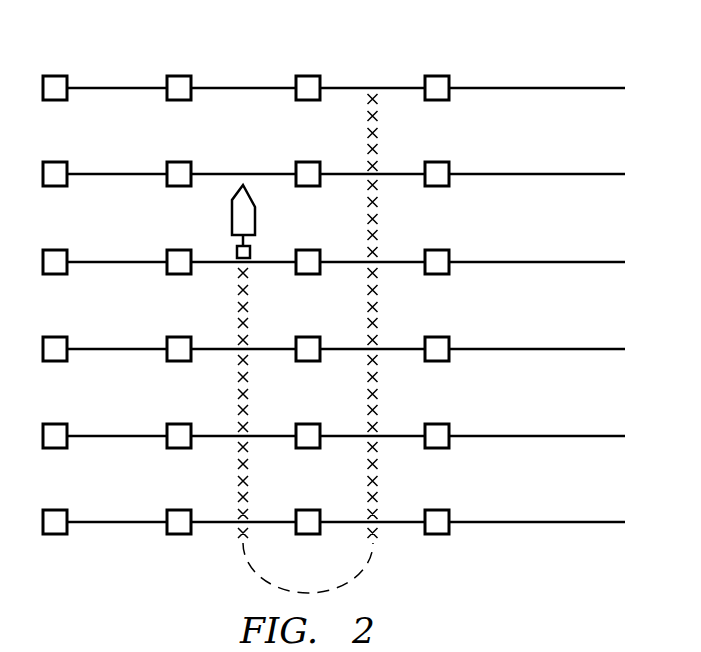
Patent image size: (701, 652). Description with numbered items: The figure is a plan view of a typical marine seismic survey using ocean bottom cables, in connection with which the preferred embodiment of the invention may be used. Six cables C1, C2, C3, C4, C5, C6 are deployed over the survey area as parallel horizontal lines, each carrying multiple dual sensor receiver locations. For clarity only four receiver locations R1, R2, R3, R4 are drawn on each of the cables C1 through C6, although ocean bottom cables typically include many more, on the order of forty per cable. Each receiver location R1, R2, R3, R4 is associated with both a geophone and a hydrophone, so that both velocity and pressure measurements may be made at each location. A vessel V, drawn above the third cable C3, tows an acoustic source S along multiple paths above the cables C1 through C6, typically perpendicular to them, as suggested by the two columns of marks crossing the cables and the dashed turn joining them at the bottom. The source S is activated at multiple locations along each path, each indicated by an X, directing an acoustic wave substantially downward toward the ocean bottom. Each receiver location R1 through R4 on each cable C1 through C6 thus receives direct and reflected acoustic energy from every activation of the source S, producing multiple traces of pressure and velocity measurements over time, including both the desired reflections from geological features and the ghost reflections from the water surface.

The receiver location R1 is at (57, 509).
The receiver location R2 is at (181, 509).
The receiver location R3 is at (310, 509).
The receiver location R4 is at (439, 509).
The ocean bottom cable C1 is at (583, 88).
The ocean bottom cable C2 is at (583, 174).
The ocean bottom cable C3 is at (583, 262).
The ocean bottom cable C4 is at (583, 349).
The ocean bottom cable C5 is at (583, 436).
The ocean bottom cable C6 is at (583, 522).
The vessel V is at (232, 216).
The acoustic source S is at (237, 250).